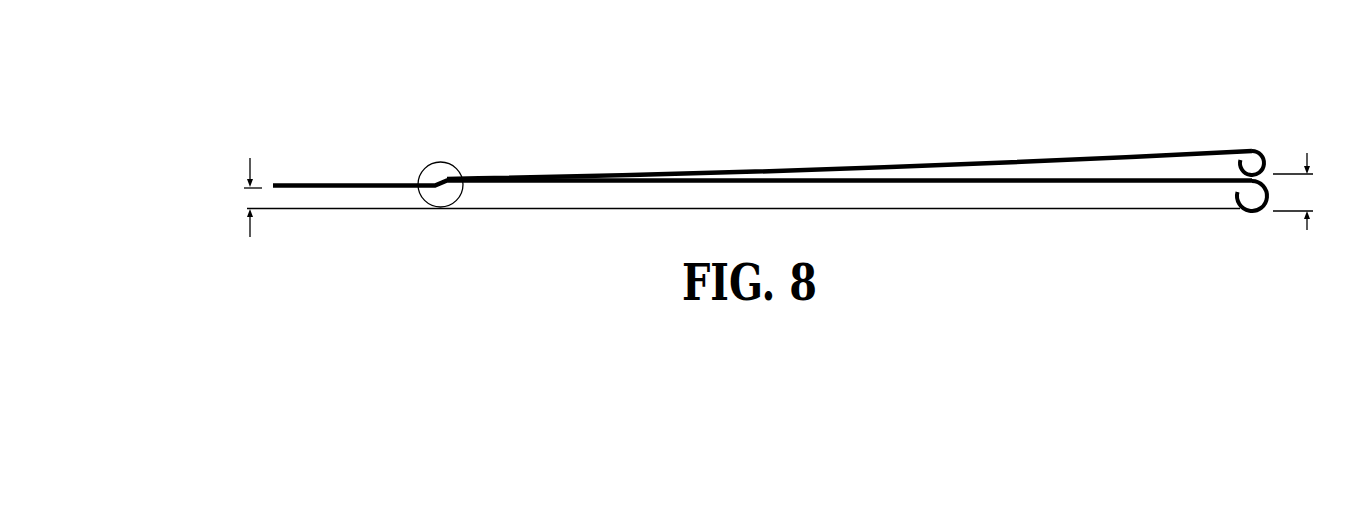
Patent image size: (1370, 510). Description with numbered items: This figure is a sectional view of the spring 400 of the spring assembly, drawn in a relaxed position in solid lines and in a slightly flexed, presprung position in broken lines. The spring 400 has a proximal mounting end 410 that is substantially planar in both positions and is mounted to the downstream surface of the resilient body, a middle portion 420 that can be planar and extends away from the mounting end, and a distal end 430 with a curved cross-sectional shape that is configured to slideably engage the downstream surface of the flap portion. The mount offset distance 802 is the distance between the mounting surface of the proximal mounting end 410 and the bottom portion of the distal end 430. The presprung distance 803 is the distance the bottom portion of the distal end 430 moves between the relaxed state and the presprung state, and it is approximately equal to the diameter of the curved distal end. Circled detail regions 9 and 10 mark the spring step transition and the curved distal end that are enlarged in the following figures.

The spring 400 is at (651, 112).
The proximal mounting end 410 is at (372, 181).
The middle portion 420 is at (872, 170).
The distal end 430 is at (1263, 150).
The detail region of FIG. 9 is at (453, 163).
The lower curled end / detail region of FIG. 10 is at (1255, 214).
The mount offset distance 802 is at (252, 198).
The presprung distance 803 is at (1308, 193).